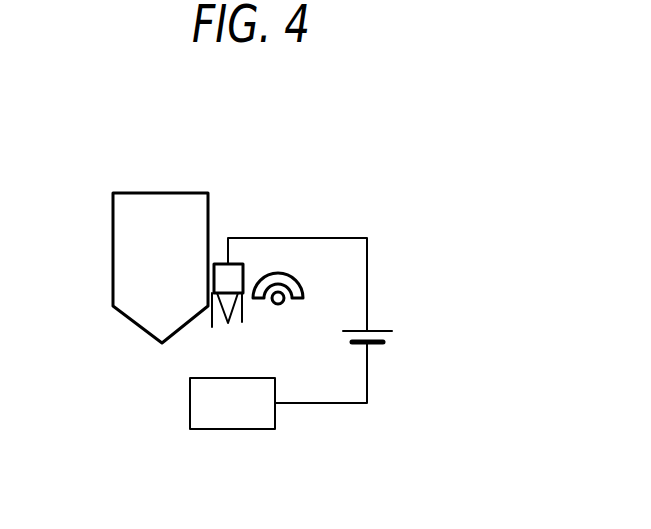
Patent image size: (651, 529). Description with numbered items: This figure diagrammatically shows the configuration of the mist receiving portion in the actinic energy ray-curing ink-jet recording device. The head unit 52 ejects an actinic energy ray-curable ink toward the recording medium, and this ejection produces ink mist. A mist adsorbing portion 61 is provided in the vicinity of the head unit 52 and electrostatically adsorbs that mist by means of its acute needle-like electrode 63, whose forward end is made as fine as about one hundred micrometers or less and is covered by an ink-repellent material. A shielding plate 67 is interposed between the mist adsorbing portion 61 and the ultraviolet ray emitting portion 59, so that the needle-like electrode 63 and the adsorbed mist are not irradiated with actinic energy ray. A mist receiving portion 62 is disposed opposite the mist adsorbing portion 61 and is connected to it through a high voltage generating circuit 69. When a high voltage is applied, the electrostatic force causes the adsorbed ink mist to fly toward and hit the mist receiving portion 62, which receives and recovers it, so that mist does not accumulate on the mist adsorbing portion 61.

The head unit 52 is at (131, 191).
The mist adsorbing portion 61 is at (217, 262).
The ultraviolet ray emitting portion 59 is at (296, 271).
The high voltage generating circuit 69 is at (392, 340).
The mist receiving portion 62 is at (225, 429).
The needle-like electrode 63 is at (230, 327).
The shielding plate 67 is at (243, 322).